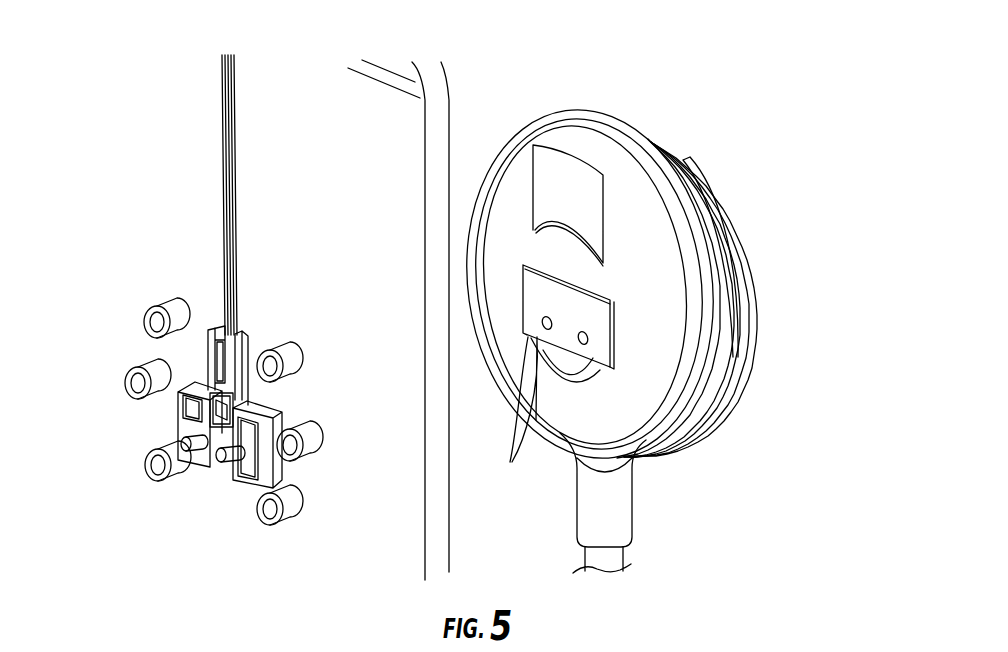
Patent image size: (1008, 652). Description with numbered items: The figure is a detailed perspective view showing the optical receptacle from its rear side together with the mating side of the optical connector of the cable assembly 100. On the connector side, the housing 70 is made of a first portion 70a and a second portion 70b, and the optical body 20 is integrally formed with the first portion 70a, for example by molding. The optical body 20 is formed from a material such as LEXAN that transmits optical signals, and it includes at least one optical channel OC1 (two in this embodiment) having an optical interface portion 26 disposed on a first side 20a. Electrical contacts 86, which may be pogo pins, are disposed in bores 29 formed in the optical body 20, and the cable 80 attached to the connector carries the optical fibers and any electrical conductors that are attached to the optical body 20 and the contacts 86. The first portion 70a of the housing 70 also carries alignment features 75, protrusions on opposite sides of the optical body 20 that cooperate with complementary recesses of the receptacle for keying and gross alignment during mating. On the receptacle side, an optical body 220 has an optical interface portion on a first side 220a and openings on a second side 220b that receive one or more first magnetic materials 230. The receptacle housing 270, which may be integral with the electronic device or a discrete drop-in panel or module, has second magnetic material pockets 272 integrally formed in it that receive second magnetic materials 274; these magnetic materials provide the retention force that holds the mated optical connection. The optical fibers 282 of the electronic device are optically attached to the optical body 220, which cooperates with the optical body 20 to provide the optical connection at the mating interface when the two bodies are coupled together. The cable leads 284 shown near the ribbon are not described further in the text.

The cable assembly 100 is at (742, 103).
The optical body 20 is at (612, 298).
The first side 20a is at (618, 345).
The optical interface portion 26 is at (562, 303).
The bores 29 is at (588, 339).
The optical channel OC1 is at (612, 298).
The housing 70 is at (843, 415).
The first portion 70a is at (663, 440).
The second portion 70b is at (709, 420).
The alignment features 75 is at (575, 190).
The cable 80 is at (612, 560).
The electrical contacts 86 is at (517, 440).
The optical body 220 is at (238, 487).
The first side 220a is at (270, 421).
The second side 220b is at (205, 478).
The first magnetic materials 230 is at (243, 431).
The housing 270 is at (313, 503).
The second magnetic material pockets 272 is at (288, 361).
The second magnetic materials 274 is at (262, 352).
The optical fibers 282 is at (232, 240).
The cable 284 is at (233, 184).